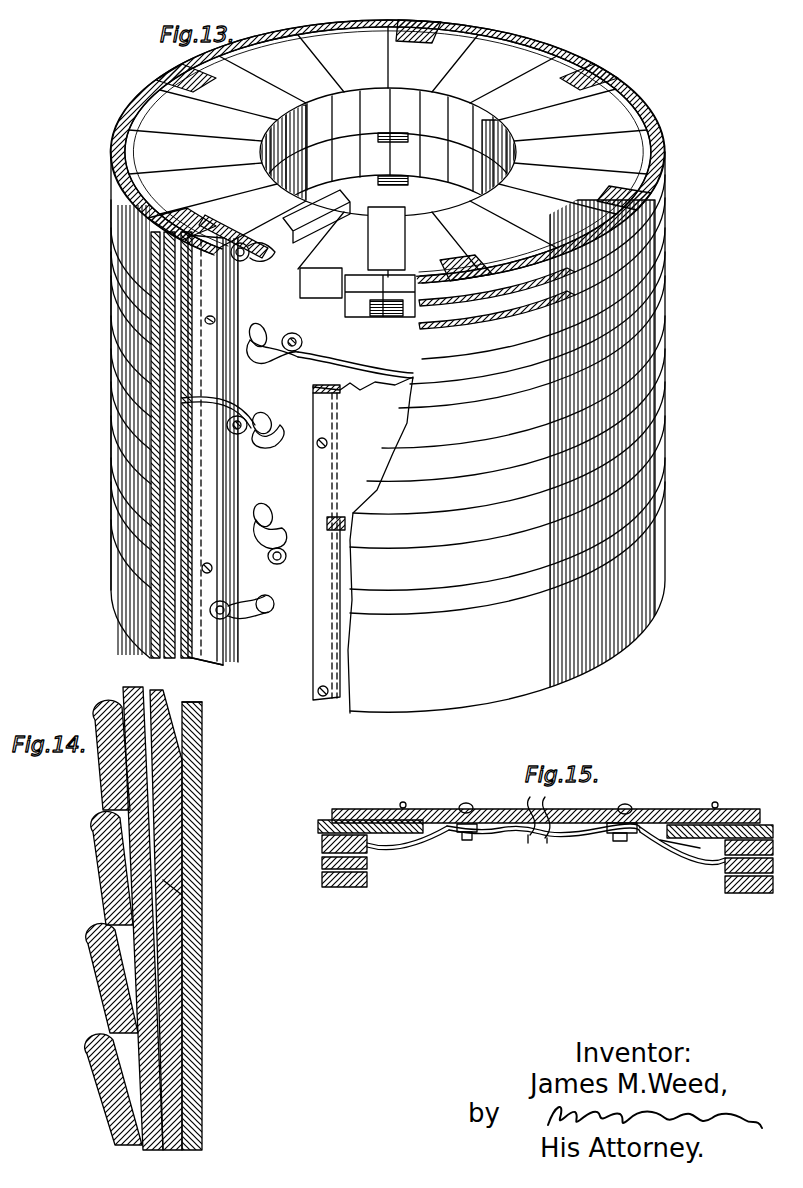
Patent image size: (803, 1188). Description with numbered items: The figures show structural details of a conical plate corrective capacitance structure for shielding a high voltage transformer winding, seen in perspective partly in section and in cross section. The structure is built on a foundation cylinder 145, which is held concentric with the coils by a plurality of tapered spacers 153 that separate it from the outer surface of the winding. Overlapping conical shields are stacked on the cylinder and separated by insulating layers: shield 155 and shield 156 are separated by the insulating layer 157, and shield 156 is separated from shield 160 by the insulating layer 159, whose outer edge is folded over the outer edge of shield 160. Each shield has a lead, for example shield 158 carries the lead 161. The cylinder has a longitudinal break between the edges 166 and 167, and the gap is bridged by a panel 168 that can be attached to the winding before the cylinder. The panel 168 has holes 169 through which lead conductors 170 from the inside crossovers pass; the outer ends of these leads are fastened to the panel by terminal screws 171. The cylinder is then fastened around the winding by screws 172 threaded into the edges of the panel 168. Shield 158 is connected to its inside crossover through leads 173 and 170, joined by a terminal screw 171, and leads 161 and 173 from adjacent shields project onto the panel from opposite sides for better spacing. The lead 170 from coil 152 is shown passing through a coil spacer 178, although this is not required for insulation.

In FIG. 13, the foundation cylinder 145 is at (648, 122).
In FIG. 14, the foundation cylinder 145 is at (197, 925).
In FIG. 15, the foundation cylinder 145 is at (318, 824).
In FIG. 13, the coil 152 is at (594, 123).
In FIG. 13, the tapered spacers 153 is at (597, 84).
In FIG. 13, the shield 155 is at (113, 237).
In FIG. 14, the shield 155 is at (147, 684).
In FIG. 15, the shield 155 is at (323, 848).
In FIG. 13, the shield 156 is at (190, 280).
In FIG. 14, the shield 156 is at (173, 775).
In FIG. 15, the shield 156 is at (320, 838).
In FIG. 13, the insulating layer 157 is at (194, 297).
In FIG. 14, the insulating layer 157 is at (143, 687).
In FIG. 13, the shield 158 is at (150, 273).
In FIG. 14, the shield 158 is at (127, 697).
In FIG. 13, the insulating layer 159 is at (164, 300).
In FIG. 14, the insulating layer 159 is at (95, 842).
In FIG. 13, the shield 160 is at (180, 327).
In FIG. 14, the shield 160 is at (93, 877).
In FIG. 13, the lead 161 is at (223, 410).
In FIG. 14, the lead 161 is at (163, 893).
In FIG. 15, the lead 161 is at (413, 850).
In FIG. 13, the edge 166 is at (207, 640).
In FIG. 15, the edge 166 is at (447, 836).
In FIG. 13, the edge 167 is at (323, 697).
In FIG. 15, the edge 167 is at (655, 836).
In FIG. 13, the panel 168 is at (310, 655).
In FIG. 15, the panel 168 is at (580, 812).
In FIG. 13, the holes 169 is at (270, 325).
In FIG. 15, the holes 169 is at (520, 806).
In FIG. 13, the lead conductors 170 is at (260, 363).
In FIG. 15, the lead conductors 170 is at (545, 832).
In FIG. 13, the terminal screws 171 is at (303, 340).
In FIG. 15, the terminal screws 171 is at (620, 841).
In FIG. 13, the screws 172 is at (327, 442).
In FIG. 15, the screws 172 is at (405, 808).
In FIG. 13, the lead 173 is at (393, 380).
In FIG. 15, the lead 173 is at (690, 850).
In FIG. 13, the coil spacer 178 is at (292, 216).